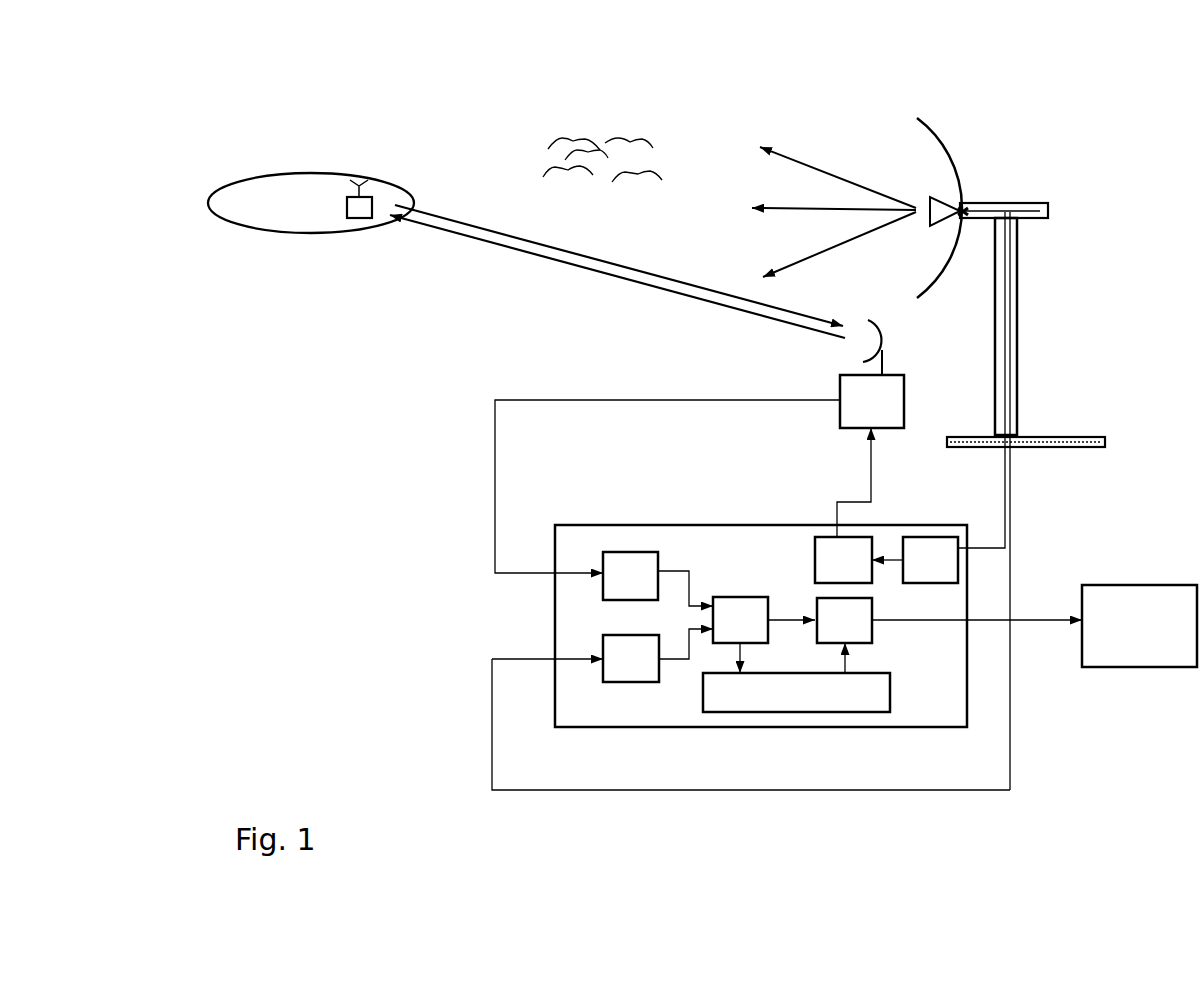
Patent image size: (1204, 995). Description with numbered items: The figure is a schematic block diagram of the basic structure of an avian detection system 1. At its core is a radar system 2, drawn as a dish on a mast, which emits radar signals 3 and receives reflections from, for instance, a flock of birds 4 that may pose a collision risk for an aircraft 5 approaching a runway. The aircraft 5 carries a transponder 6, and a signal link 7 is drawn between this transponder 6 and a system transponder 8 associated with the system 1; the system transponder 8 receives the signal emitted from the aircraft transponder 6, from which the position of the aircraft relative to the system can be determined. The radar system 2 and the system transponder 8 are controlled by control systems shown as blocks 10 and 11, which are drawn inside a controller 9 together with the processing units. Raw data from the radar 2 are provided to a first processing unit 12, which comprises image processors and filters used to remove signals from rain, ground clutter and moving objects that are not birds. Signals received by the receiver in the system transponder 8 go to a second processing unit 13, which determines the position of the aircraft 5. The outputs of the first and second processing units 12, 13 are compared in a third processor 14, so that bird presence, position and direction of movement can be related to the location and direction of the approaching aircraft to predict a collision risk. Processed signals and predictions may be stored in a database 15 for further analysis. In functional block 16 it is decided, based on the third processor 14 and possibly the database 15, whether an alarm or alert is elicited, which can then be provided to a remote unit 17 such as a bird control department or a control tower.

The avian detection system 1 is at (1018, 90).
The radar system 2 is at (997, 182).
The radar signals 3 is at (832, 147).
The flock of birds 4 is at (582, 107).
The aircraft 5 is at (303, 208).
The transponder 6 is at (363, 218).
The radio link 7 is at (617, 276).
The system transponder 8 is at (840, 390).
The controller 9 is at (757, 525).
The control system 10 is at (815, 543).
The control system 11 is at (941, 540).
The first processing unit 12 is at (617, 682).
The second processing unit 13 is at (632, 552).
The third processor 14 is at (730, 597).
The database 15 is at (803, 712).
The functional block 16 is at (872, 640).
The remote unit 17 is at (1120, 585).